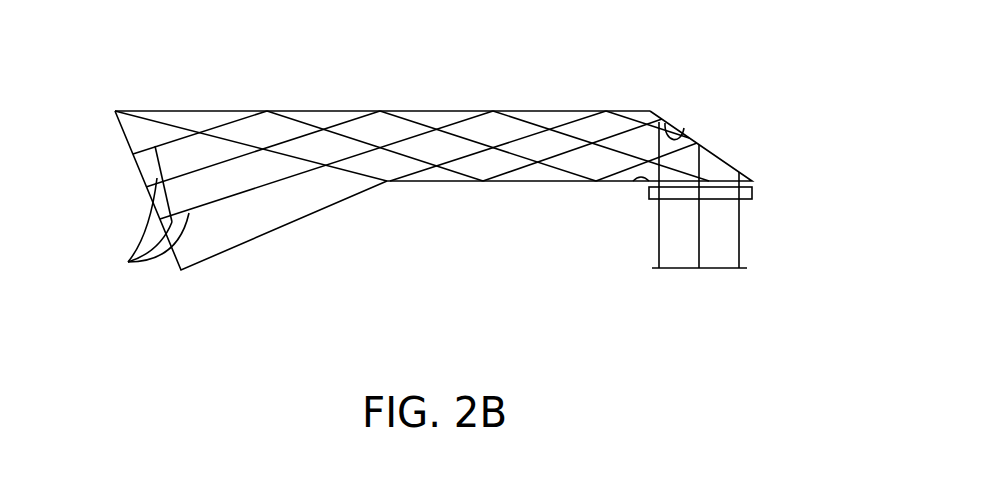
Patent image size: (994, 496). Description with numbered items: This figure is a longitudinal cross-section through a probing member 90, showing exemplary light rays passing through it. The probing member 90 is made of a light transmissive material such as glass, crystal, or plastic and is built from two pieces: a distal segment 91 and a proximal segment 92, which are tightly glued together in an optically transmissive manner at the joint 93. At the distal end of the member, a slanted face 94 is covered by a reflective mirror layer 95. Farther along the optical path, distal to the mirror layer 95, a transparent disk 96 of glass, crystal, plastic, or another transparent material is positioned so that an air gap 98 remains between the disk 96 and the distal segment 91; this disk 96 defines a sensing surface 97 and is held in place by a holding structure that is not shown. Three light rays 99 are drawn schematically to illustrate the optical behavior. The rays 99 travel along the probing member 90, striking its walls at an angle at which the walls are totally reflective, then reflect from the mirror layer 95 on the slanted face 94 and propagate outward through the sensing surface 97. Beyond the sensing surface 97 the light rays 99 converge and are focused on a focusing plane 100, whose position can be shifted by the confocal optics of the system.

The probing member 90 is at (422, 111).
The distal segment 91 is at (583, 114).
The proximal segment 92 is at (252, 220).
The glued joint 93 is at (290, 158).
The slanted face 94 is at (666, 121).
The reflective mirror layer 95 is at (699, 144).
The transparent disk 96 is at (752, 193).
The sensing surface 97 is at (717, 200).
The air gap 98 is at (634, 184).
The light rays 99 is at (128, 262).
The focusing plane 100 is at (677, 270).